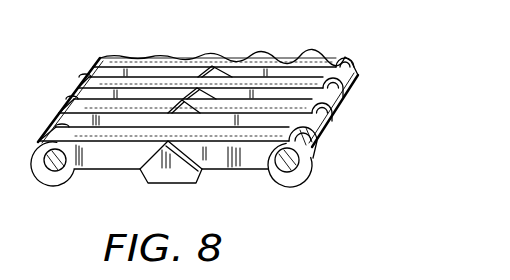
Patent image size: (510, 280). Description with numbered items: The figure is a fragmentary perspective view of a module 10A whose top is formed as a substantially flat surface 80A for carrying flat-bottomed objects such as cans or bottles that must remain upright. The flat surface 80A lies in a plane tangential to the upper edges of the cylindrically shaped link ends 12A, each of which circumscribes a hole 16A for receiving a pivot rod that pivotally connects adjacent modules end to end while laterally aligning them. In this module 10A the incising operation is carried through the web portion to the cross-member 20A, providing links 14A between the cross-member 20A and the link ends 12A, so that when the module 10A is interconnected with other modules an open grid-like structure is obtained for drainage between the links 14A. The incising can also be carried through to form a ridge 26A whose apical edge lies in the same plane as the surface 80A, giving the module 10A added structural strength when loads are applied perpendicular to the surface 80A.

The module 10A is at (200, 51).
The link ends 12A is at (312, 152).
The links 14A is at (254, 163).
The hole 16A is at (291, 171).
The cross-member 20A is at (181, 175).
The ridge 26A is at (216, 70).
The flat surface 80A is at (296, 83).